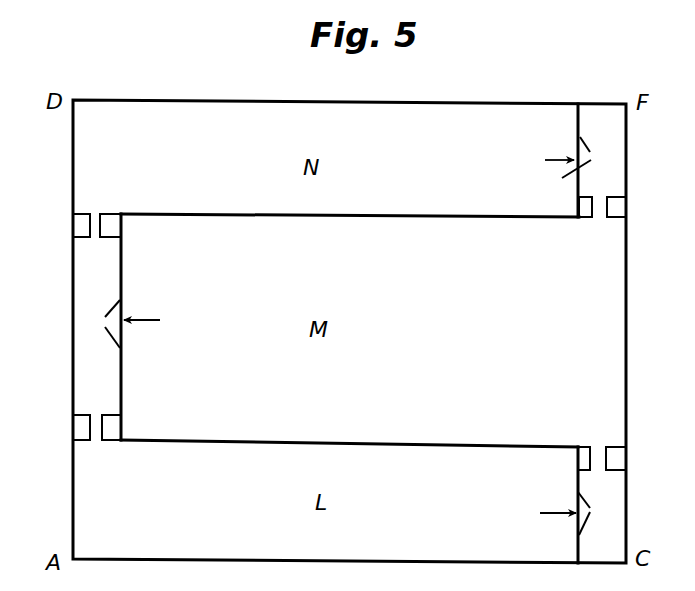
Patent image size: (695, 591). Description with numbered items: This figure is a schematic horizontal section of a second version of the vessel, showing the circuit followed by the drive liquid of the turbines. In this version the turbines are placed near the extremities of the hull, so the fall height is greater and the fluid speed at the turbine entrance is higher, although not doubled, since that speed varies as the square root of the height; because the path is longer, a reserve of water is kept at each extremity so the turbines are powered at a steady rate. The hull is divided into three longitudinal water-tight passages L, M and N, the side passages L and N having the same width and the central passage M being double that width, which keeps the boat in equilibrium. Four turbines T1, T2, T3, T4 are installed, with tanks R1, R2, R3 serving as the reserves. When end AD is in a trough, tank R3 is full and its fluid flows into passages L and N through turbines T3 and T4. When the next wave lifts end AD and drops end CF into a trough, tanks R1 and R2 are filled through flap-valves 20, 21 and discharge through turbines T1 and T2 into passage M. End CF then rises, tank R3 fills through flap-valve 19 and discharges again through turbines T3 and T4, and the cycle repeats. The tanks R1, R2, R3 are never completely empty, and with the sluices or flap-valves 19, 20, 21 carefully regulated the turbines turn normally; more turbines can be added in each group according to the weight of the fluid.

The flap-valve 19 is at (122, 302).
The flap-valve 20 is at (577, 518).
The flap-valve 21 is at (555, 179).
The tank R1 is at (596, 513).
The tank R2 is at (589, 154).
The tank R3 is at (101, 325).
The turbine T1 is at (556, 424).
The turbine T2 is at (572, 257).
The turbine T3 is at (120, 483).
The turbine T4 is at (138, 168).